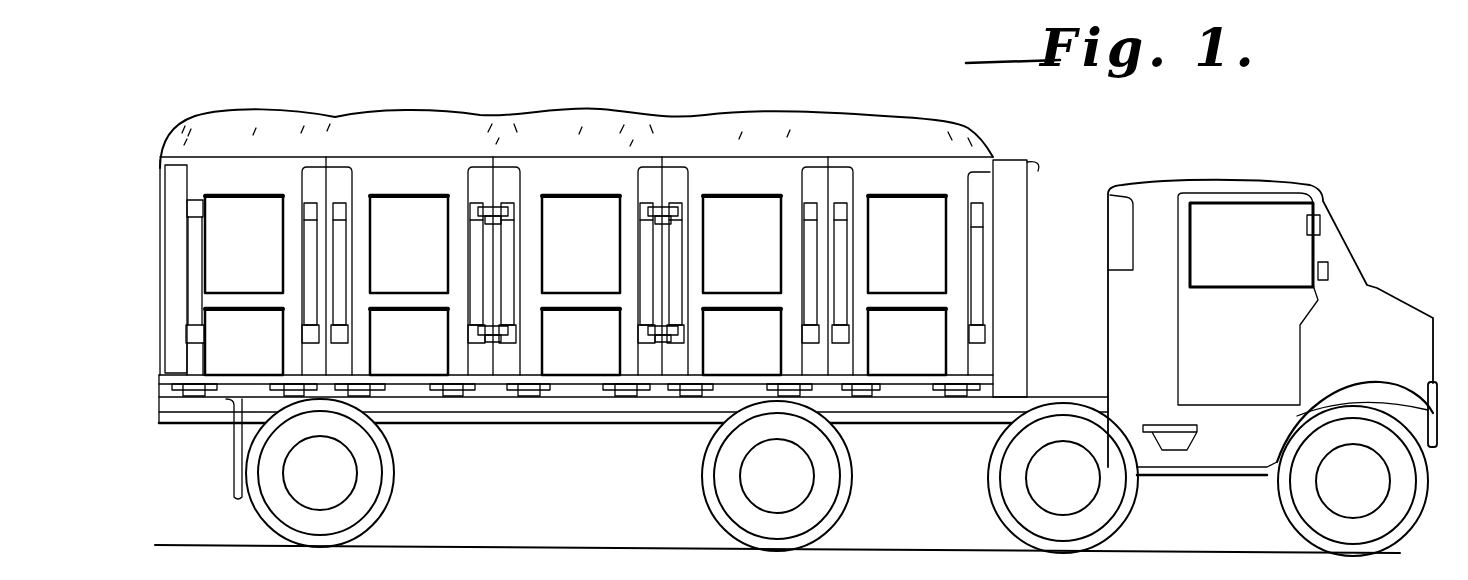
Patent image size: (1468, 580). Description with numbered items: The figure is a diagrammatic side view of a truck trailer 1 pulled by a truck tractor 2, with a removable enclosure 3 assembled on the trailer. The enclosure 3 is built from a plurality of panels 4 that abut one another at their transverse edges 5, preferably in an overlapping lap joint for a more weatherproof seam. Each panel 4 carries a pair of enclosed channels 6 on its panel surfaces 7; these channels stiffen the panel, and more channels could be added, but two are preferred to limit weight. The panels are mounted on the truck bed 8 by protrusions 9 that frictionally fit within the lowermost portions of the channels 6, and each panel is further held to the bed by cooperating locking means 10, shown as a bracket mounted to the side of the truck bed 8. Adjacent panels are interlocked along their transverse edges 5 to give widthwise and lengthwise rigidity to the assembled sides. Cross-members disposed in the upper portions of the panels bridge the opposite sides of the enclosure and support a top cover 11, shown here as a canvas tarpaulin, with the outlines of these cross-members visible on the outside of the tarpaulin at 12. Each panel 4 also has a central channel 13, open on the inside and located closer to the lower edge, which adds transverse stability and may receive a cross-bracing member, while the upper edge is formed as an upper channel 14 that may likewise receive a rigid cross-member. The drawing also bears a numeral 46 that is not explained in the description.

The truck trailer 1 is at (158, 405).
The truck tractor 2 is at (1218, 189).
The removable enclosure 3 is at (188, 228).
The panels 4 is at (255, 244).
The transverse edges 5 is at (327, 182).
The enclosed channels 6 is at (291, 273).
The panel surfaces 7 is at (310, 180).
The truck bed 8 is at (572, 408).
The protrusions 9 is at (194, 399).
The locking means 10 is at (437, 386).
The top cover 11 is at (743, 133).
The cross-member outlines 12 is at (943, 137).
The central channel 13 is at (257, 305).
The upper channel 14 is at (282, 148).
The front end wall 46 is at (1028, 302).